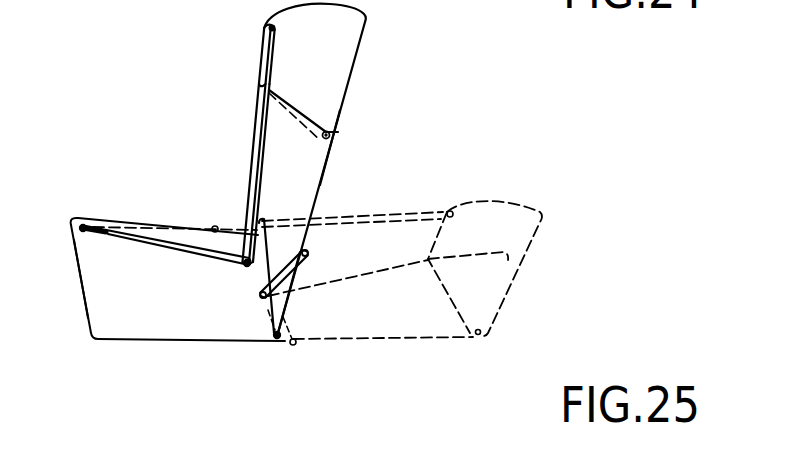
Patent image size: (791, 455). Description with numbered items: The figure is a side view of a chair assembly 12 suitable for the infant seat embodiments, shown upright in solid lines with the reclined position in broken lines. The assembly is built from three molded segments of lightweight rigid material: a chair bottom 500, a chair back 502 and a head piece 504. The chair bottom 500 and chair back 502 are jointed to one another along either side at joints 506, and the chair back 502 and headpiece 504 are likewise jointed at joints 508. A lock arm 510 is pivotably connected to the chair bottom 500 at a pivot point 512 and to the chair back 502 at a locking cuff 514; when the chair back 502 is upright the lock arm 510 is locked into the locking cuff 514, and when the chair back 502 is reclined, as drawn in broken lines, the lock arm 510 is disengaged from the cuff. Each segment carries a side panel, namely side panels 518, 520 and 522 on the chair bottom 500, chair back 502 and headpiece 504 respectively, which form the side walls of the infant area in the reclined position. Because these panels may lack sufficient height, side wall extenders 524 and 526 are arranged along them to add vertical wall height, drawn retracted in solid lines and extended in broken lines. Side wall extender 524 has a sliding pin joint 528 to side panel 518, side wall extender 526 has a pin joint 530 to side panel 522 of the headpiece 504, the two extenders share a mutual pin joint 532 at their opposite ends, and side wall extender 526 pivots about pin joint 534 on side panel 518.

The chair assembly 12 is at (162, 96).
The chair bottom 500 is at (165, 334).
The chair back 502 is at (324, 171).
The head piece 504 is at (350, 73).
The joints 506 is at (279, 343).
The joints 508 is at (331, 135).
The lock arm 510 is at (298, 274).
The pivot point 512 is at (258, 298).
The locking cuff 514 is at (308, 251).
The side panel 518 is at (80, 278).
The side panel 520 is at (255, 134).
The side panel 522 is at (284, 62).
The side wall extender 524 is at (147, 222).
The side wall extender 526 is at (262, 168).
The sliding pin joint 528 is at (106, 221).
The pin joint 530 is at (266, 25).
The pin joint 532 is at (216, 226).
The pin joint 534 is at (260, 220).